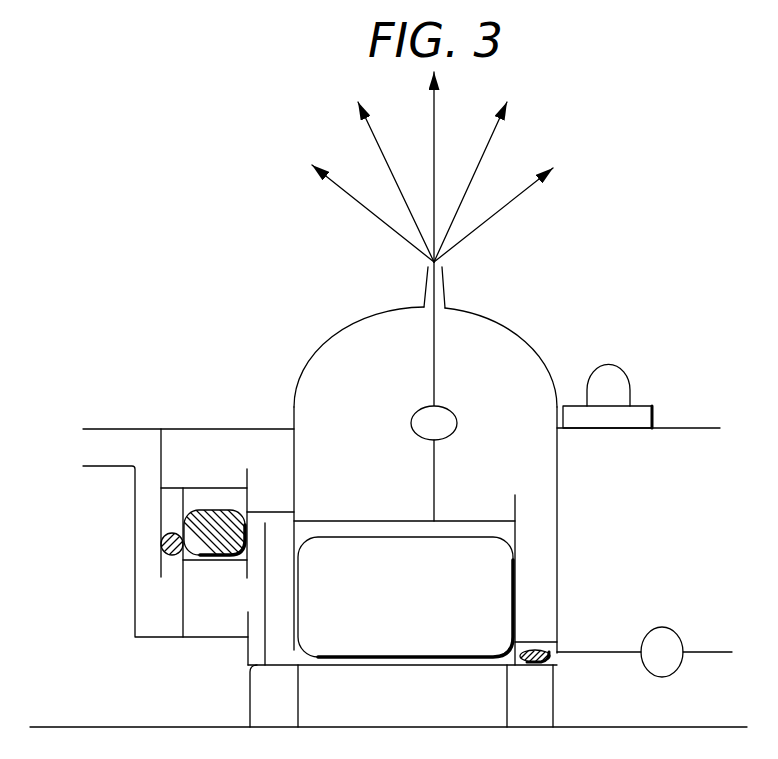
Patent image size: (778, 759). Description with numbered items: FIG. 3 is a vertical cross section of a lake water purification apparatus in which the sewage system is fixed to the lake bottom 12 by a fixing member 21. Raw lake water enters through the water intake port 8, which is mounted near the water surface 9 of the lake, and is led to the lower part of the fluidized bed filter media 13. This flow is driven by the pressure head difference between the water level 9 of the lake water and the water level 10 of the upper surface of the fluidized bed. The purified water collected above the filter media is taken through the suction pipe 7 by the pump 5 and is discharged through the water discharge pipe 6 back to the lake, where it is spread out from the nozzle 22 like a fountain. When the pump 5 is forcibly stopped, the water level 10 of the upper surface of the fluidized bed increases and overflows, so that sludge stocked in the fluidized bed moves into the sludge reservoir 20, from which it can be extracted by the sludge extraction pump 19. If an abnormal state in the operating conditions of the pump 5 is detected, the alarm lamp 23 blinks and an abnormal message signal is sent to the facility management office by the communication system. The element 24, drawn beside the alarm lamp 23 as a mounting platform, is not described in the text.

The pump 5 is at (457, 425).
The water discharge pipe 6 is at (434, 348).
The suction pipe 7 is at (434, 480).
The water intake port 8 is at (80, 449).
The water surface 9 is at (103, 428).
The water level of the upper surface of the fluidized bed 10 is at (398, 521).
The lake bottom 12 is at (690, 725).
The fluidized bed filter media 13 is at (330, 537).
The sludge extraction pump 19 is at (683, 635).
The sludge reservoir 20 is at (533, 643).
The fixing member 21 is at (547, 702).
The nozzle 22 is at (443, 268).
The alarm lamp 23 is at (617, 382).
The stage 24 is at (652, 410).